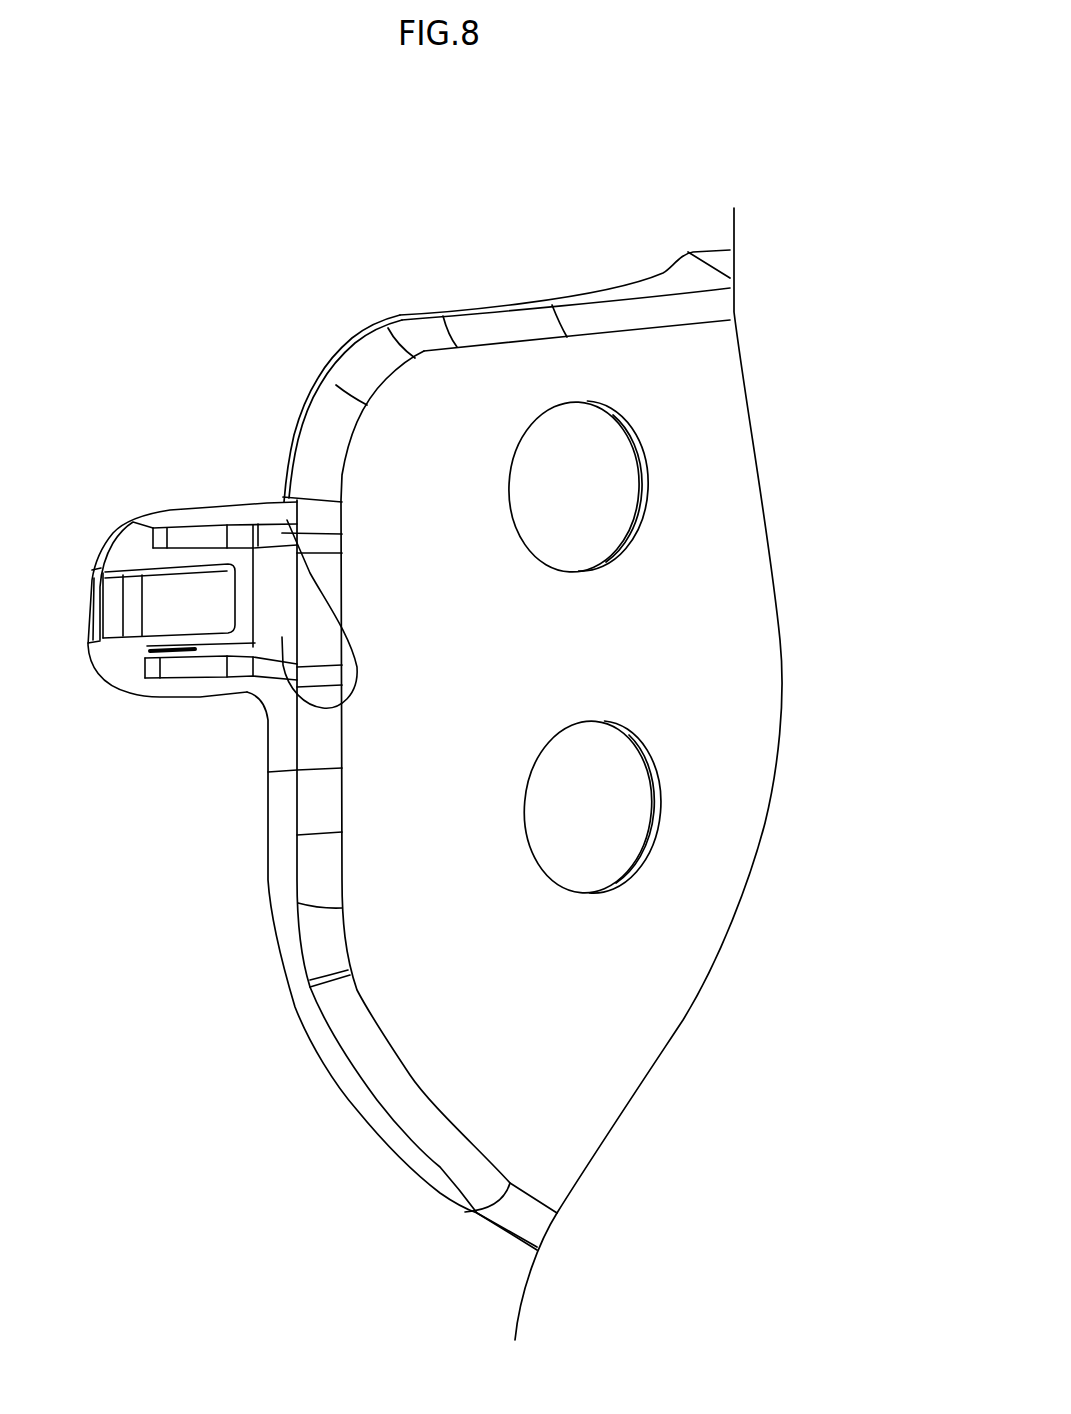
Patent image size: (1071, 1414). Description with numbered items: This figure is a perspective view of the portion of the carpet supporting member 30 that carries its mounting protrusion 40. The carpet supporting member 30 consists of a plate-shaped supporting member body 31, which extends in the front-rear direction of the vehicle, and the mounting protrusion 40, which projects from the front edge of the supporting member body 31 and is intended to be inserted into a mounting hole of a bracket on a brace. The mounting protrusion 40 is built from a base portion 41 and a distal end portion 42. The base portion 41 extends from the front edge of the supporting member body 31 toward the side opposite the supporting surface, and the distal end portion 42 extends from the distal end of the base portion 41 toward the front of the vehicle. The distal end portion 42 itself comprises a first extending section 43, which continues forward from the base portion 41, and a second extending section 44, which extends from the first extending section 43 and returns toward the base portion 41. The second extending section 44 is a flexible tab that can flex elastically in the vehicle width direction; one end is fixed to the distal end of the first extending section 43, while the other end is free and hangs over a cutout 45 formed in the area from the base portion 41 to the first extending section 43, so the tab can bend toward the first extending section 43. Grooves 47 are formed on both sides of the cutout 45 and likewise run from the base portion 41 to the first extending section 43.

The carpet supporting member 30 is at (415, 282).
The supporting member body 31 is at (447, 1057).
The mounting protrusion 40 is at (222, 617).
The base portion 41 is at (282, 636).
The distal end portion 42 is at (192, 626).
The first extending section 43 is at (122, 658).
The second extending section 44 is at (178, 608).
The cutout 45 is at (177, 554).
The grooves 47 is at (223, 540).